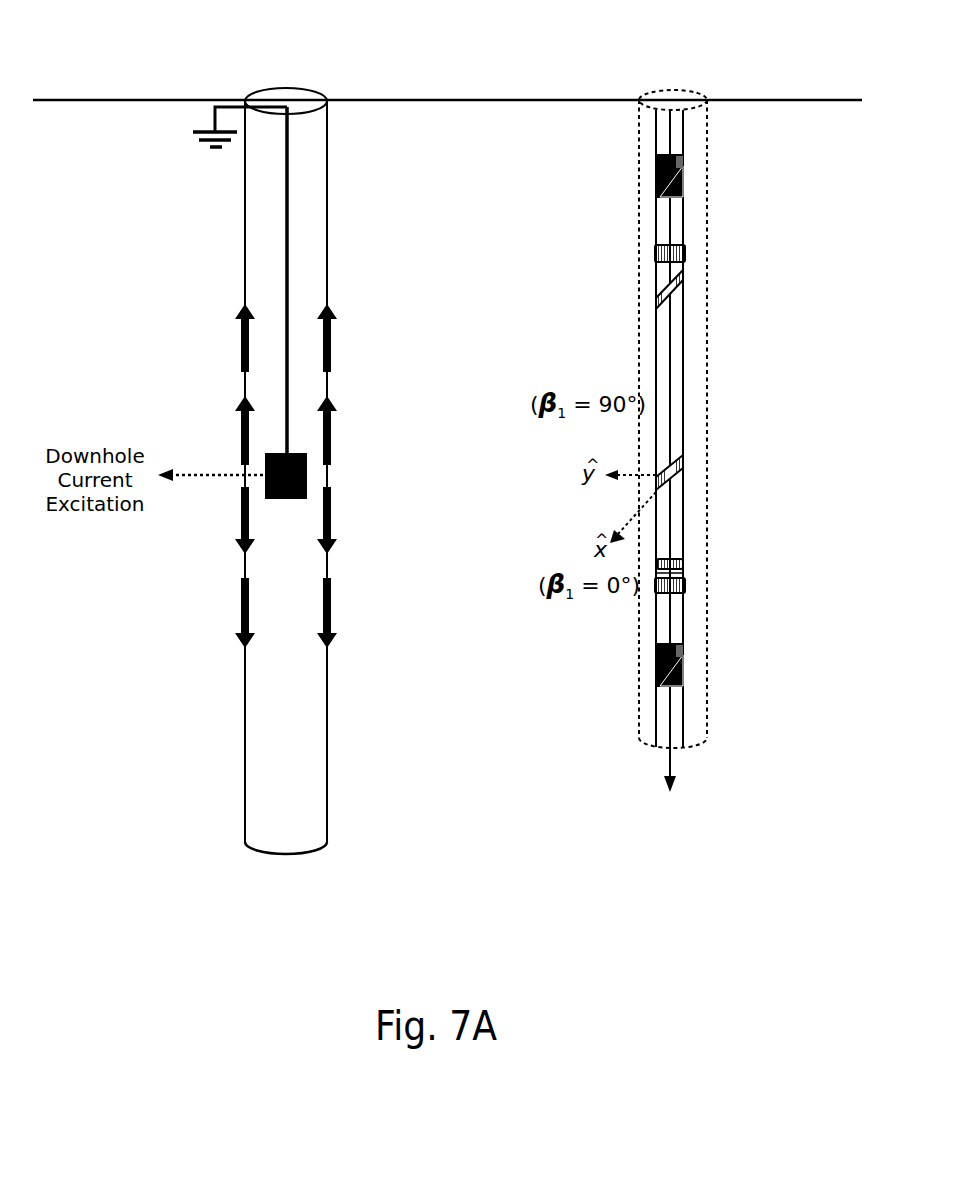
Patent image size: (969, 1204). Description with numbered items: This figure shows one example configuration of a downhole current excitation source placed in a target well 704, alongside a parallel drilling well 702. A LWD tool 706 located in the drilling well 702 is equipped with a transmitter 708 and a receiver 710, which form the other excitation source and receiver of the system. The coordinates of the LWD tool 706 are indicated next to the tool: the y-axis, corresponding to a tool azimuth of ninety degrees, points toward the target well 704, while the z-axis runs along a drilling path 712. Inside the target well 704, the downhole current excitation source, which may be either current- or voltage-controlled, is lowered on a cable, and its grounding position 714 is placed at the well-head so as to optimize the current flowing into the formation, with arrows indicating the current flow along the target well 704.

The drilling well 702 is at (680, 100).
The target well 704 is at (306, 100).
The LWD tool 706 is at (693, 352).
The transmitter 708 is at (656, 307).
The receiver 710 is at (670, 476).
The drilling path 712 is at (681, 824).
The grounding position 714 is at (214, 152).